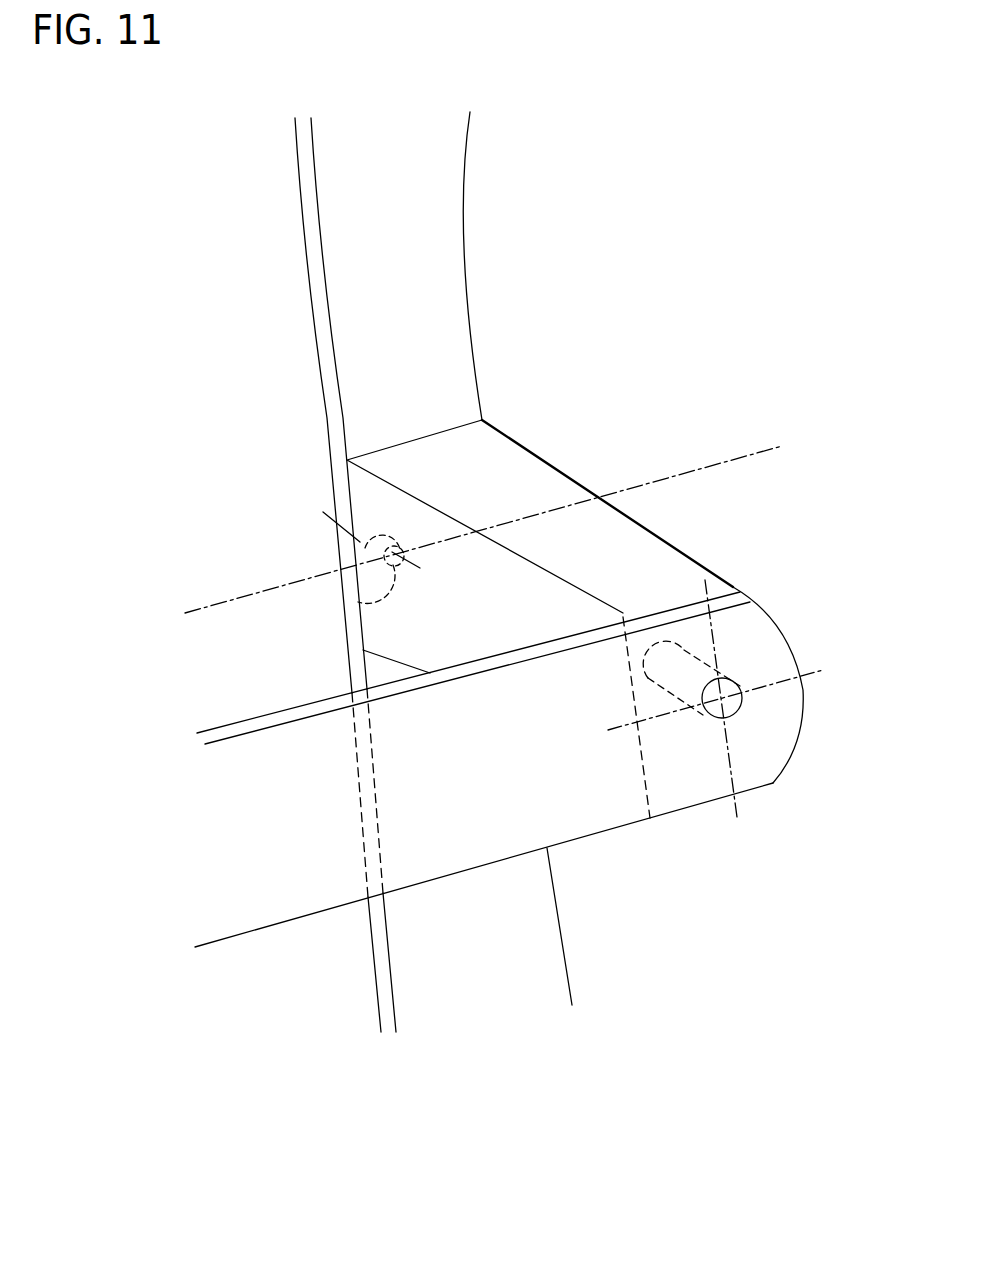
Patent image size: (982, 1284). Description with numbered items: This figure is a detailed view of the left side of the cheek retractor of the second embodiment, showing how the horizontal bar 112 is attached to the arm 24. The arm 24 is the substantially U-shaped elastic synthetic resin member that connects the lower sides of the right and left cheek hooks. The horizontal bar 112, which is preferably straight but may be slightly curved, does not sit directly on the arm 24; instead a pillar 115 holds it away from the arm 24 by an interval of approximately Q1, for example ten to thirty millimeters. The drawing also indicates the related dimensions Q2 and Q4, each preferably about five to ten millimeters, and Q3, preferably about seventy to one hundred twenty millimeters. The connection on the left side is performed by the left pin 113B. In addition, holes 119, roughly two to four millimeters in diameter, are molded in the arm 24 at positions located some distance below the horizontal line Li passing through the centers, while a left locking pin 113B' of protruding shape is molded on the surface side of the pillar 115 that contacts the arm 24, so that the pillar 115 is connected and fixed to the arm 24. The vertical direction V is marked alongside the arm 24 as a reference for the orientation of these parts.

The arm 24 is at (443, 315).
The pillar 115 is at (498, 462).
The horizontal bar 112 is at (315, 757).
The left pin 113B is at (715, 732).
The left locking pin 113B' is at (337, 581).
The holes 119 is at (352, 545).
The vertical direction V is at (220, 598).
The interval Q1 is at (867, 557).
The dimension Q2 is at (773, 783).
The dimension Q3 is at (805, 720).
The dimension Q4 is at (480, 398).
The horizontal line Li is at (742, 452).